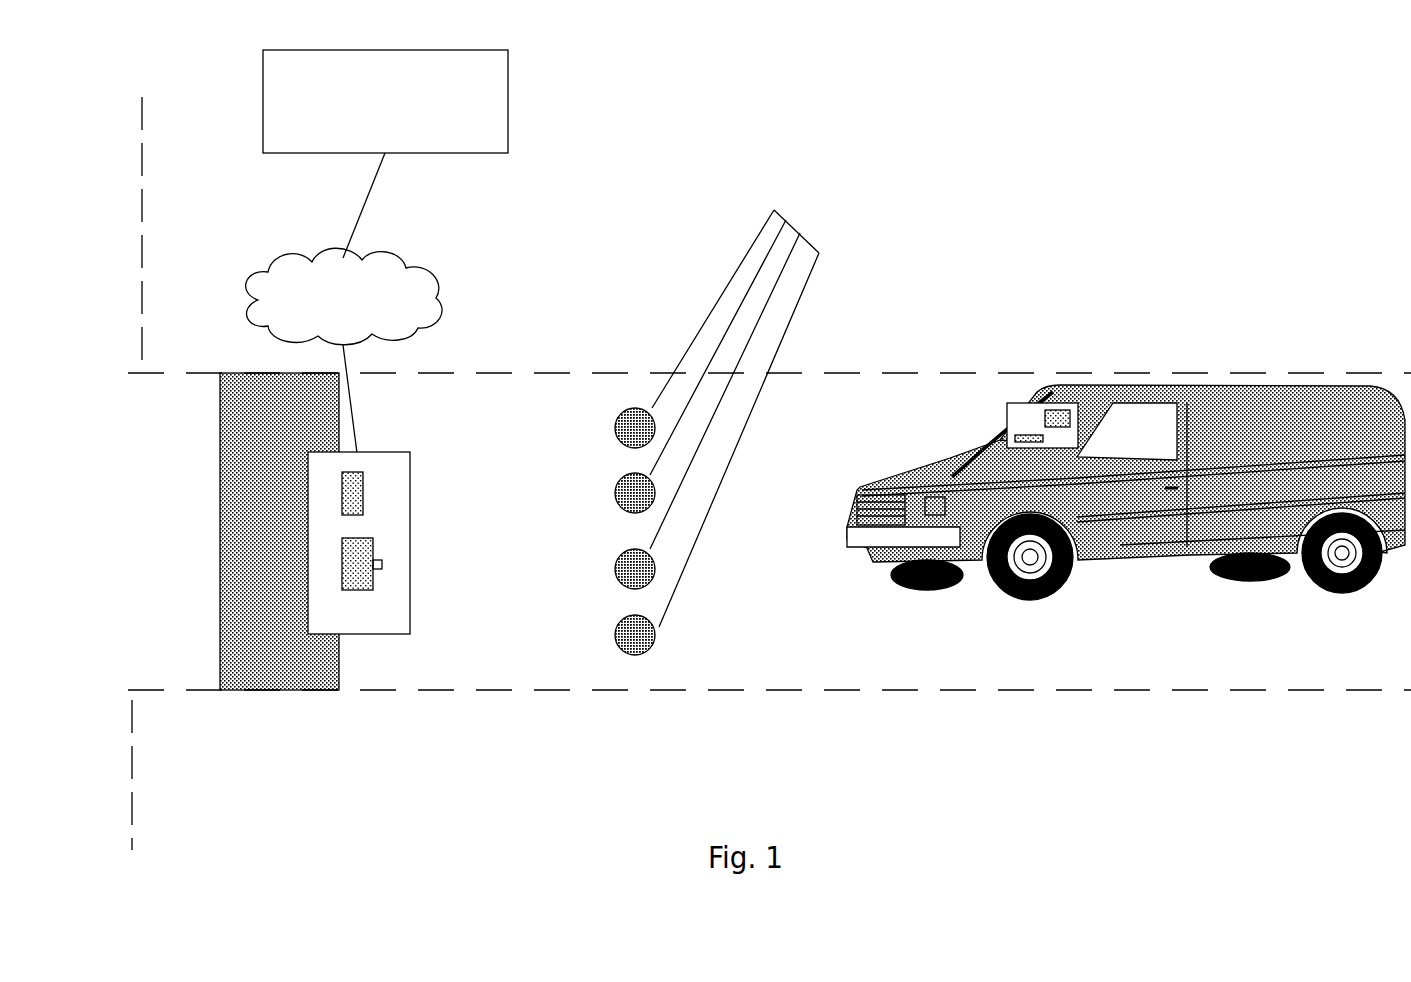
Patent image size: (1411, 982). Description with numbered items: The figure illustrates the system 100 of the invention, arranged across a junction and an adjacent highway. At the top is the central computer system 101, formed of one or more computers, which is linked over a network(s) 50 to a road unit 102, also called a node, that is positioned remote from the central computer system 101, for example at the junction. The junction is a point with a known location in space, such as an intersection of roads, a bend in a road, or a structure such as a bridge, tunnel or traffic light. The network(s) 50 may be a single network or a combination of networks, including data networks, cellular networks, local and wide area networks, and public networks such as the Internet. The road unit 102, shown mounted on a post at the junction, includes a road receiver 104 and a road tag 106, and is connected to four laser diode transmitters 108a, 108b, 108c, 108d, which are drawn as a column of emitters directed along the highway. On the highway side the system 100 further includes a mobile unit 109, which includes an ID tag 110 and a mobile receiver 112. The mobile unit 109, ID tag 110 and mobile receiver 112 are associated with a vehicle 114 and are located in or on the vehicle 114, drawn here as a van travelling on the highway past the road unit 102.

The system 100 is at (1222, 254).
The central computer system 101 is at (385, 101).
The network(s) 50 is at (344, 296).
The road unit 102 is at (415, 577).
The road receiver 104 is at (362, 593).
The road tag 106 is at (352, 470).
The laser diode transmitter 108a is at (606, 428).
The laser diode transmitter 108b is at (606, 493).
The laser diode transmitter 108c is at (606, 569).
The laser diode transmitter 108d is at (606, 635).
The mobile unit 109 is at (1005, 402).
The ID tag 110 is at (1013, 438).
The mobile receiver 112 is at (1023, 412).
The vehicle 114 is at (1190, 392).